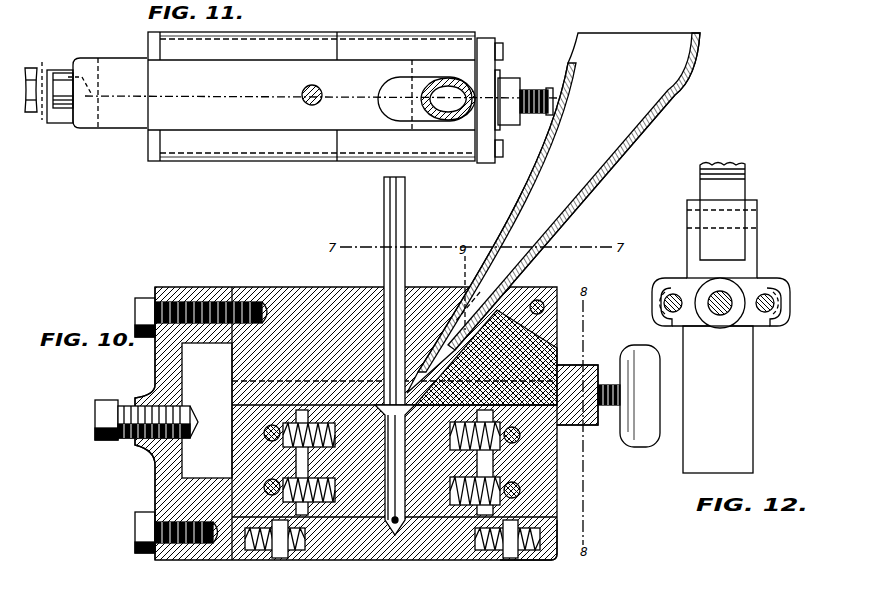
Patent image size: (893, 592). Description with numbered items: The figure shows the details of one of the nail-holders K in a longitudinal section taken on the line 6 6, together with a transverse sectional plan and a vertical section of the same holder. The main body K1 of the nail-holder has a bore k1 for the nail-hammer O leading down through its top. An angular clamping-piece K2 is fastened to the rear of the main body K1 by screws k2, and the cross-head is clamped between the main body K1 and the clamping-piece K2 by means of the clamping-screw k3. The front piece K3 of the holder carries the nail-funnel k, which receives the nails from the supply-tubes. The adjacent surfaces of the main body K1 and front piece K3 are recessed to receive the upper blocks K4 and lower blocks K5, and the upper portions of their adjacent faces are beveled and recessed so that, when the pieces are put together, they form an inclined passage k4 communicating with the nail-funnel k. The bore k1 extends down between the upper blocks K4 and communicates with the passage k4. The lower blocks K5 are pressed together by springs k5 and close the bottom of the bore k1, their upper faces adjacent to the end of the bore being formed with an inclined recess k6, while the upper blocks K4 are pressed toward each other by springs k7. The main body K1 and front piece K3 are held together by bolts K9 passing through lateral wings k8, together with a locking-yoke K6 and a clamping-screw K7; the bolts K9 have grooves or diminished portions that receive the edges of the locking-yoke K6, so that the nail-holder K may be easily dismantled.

In FIG. 11, the nail-holder K is at (311, 83).
In FIG. 10, the nail-holder K is at (268, 292).
In FIG. 12, the nail-holder K is at (774, 312).
In FIG. 11, the main body of the nail-holder K1 is at (322, 95).
In FIG. 10, the main body of the nail-holder K1 is at (306, 298).
In FIG. 11, the angular clamping-piece K2 is at (132, 53).
In FIG. 10, the angular clamping-piece K2 is at (160, 366).
In FIG. 10, the front piece of the holder K3 is at (556, 553).
In FIG. 12, the front piece of the holder K3 is at (718, 399).
In FIG. 10, the upper blocks K4 is at (493, 465).
In FIG. 10, the lower blocks K5 is at (392, 560).
In FIG. 11, the locking-yoke K6 is at (478, 40).
In FIG. 10, the locking-yoke K6 is at (588, 366).
In FIG. 12, the locking-yoke K6 is at (694, 287).
In FIG. 11, the clamping-screw K7 is at (510, 80).
In FIG. 10, the clamping-screw K7 is at (629, 396).
In FIG. 12, the clamping-screw K7 is at (720, 318).
In FIG. 11, the bolts K9 is at (503, 50).
In FIG. 12, the bolts K9 is at (668, 303).
In FIG. 10, the nail-funnel k is at (558, 146).
In FIG. 12, the nail-funnel k is at (745, 168).
In FIG. 10, the bore k1 is at (410, 300).
In FIG. 10, the screws k2 is at (148, 298).
In FIG. 10, the clamping-screw k3 is at (108, 440).
In FIG. 10, the inclined passage k4 is at (442, 352).
In FIG. 10, the springs k5 is at (280, 560).
In FIG. 11, the inclined recess k6 is at (534, 101).
In FIG. 10, the inclined recess k6 is at (400, 540).
In FIG. 10, the springs k7 is at (264, 430).
In FIG. 11, the lateral wings k8 is at (254, 36).
In FIG. 10, the hammer or nail-driver O is at (402, 222).
In FIG. 11, the section line 6 is at (543, 64).